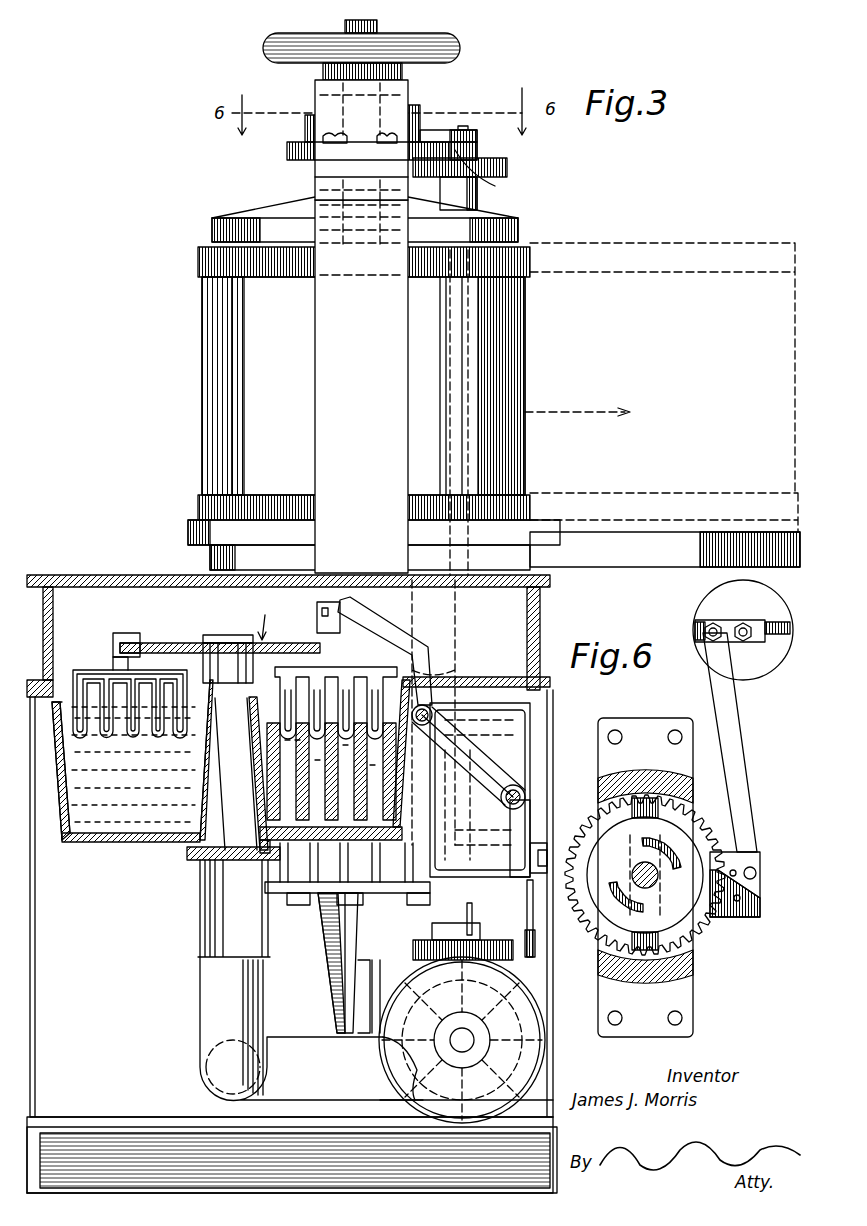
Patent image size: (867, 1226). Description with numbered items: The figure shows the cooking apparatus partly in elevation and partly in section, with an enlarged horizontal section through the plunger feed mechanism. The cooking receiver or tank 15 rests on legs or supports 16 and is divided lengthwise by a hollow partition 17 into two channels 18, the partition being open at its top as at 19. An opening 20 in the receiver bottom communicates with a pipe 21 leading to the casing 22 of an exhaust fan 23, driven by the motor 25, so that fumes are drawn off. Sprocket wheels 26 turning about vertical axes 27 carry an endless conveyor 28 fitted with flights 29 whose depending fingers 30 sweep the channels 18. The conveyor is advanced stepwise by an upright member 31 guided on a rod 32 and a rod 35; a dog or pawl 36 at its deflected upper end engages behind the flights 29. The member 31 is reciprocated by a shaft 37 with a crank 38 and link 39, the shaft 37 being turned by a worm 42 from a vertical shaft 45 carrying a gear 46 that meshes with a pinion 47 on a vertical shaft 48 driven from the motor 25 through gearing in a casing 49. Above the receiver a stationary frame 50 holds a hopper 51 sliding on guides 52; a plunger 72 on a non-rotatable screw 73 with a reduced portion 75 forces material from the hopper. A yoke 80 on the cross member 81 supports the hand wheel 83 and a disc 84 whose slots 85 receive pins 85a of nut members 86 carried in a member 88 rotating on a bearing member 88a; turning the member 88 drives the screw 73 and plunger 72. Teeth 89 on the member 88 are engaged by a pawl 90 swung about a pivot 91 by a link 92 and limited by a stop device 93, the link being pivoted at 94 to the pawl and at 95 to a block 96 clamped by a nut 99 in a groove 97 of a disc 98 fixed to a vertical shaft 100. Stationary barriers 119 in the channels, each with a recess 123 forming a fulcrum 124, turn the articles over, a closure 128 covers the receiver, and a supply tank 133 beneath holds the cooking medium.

In FIG. 3, the cooking receiver or tank 15 is at (68, 812).
In FIG. 3, the legs or supports 16 is at (553, 1125).
In FIG. 3, the hollow partition 17 is at (200, 790).
In FIG. 3, the channels 18 is at (120, 842).
In FIG. 3, the opening of the partition 19 is at (228, 720).
In FIG. 3, the opening in the bottom of the receiver 20 is at (240, 855).
In FIG. 3, the pipe 21 is at (218, 908).
In FIG. 3, the casing of the exhaust fan 22 is at (522, 1010).
In FIG. 3, the exhaust fan 23 is at (400, 970).
In FIG. 3, the motor 25 is at (440, 1118).
In FIG. 3, the sprocket wheels 26 is at (273, 618).
In FIG. 3, the vertical axes 27 is at (230, 635).
In FIG. 3, the endless conveyor 28 is at (180, 643).
In FIG. 3, the flights 29 is at (125, 637).
In FIG. 3, the depending fingers 30 is at (105, 735).
In FIG. 3, the upright member 31 is at (380, 628).
In FIG. 3, the bar or rod 32 is at (425, 700).
In FIG. 3, the bar or rod 35 is at (525, 797).
In FIG. 3, the dog or pawl 36 is at (317, 622).
In FIG. 3, the shaft 37 is at (540, 860).
In FIG. 3, the disc or crank 38 is at (533, 940).
In FIG. 3, the link 39 is at (545, 850).
In FIG. 3, the worm 42 is at (425, 862).
In FIG. 3, the vertical shaft 45 is at (472, 912).
In FIG. 3, the gear 46 is at (420, 940).
In FIG. 3, the pinion 47 is at (513, 955).
In FIG. 3, the vertical shaft 48 is at (480, 930).
In FIG. 3, the casing 49 is at (517, 1050).
In FIG. 3, the frame 50 is at (320, 408).
In FIG. 3, the hopper or container 51 is at (280, 272).
In FIG. 3, the guides 52 is at (700, 530).
In FIG. 3, the plunger 72 is at (212, 230).
In FIG. 3, the non-rotatable screw 73 is at (377, 27).
In FIG. 3, the reduced portion of the screw 75 is at (315, 193).
In FIG. 3, the yoke or bearing 80 is at (325, 97).
In FIG. 6, the yoke or bearing 80 is at (650, 775).
In FIG. 3, the cross member 81 is at (390, 173).
In FIG. 3, the hand wheel 83 is at (460, 52).
In FIG. 3, the disc 84 is at (415, 113).
In FIG. 6, the slots 85 is at (612, 895).
In FIG. 6, the pins 85a is at (650, 850).
In FIG. 3, the nut members 86 is at (305, 128).
In FIG. 6, the nut members 86 is at (650, 808).
In FIG. 3, the member 88 is at (300, 162).
In FIG. 6, the bearing member 88a is at (760, 912).
In FIG. 3, the teeth 89 is at (287, 150).
In FIG. 6, the teeth 89 is at (705, 835).
In FIG. 3, the pawl 90 is at (472, 140).
In FIG. 6, the pawl 90 is at (762, 888).
In FIG. 6, the pivot 91 is at (735, 858).
In FIG. 3, the link 92 is at (440, 133).
In FIG. 6, the link 92 is at (748, 780).
In FIG. 3, the stop device 93 is at (479, 180).
In FIG. 6, the stop device 93 is at (740, 900).
In FIG. 3, the pivotal connection 94 is at (462, 126).
In FIG. 6, the pivotal connection 94 is at (758, 873).
In FIG. 6, the pivotal connection 95 is at (708, 624).
In FIG. 6, the block 96 is at (760, 620).
In FIG. 6, the groove 97 is at (780, 640).
In FIG. 3, the disc 98 is at (507, 167).
In FIG. 6, the disc 98 is at (765, 665).
In FIG. 6, the clamping nut 99 is at (745, 625).
In FIG. 3, the vertical shaft 100 is at (505, 352).
In FIG. 3, the stationary barriers 119 is at (350, 790).
In FIG. 3, the recess 123 is at (236, 774).
In FIG. 3, the fulcrum 124 is at (295, 700).
In FIG. 3, the closure 128 is at (110, 575).
In FIG. 3, the supply tank 133 is at (143, 1135).